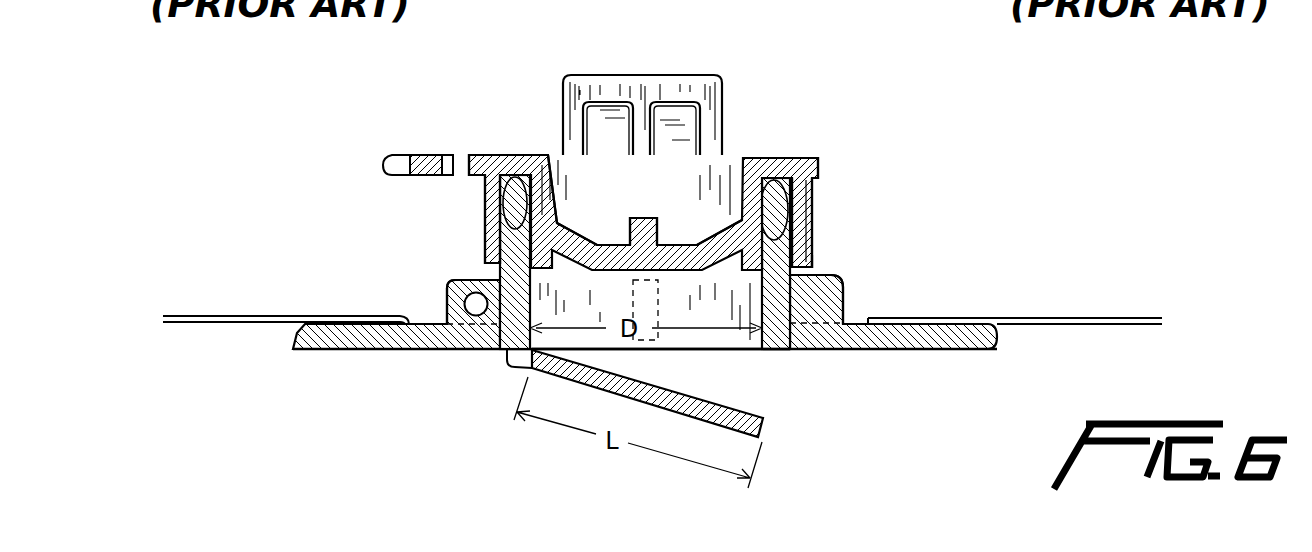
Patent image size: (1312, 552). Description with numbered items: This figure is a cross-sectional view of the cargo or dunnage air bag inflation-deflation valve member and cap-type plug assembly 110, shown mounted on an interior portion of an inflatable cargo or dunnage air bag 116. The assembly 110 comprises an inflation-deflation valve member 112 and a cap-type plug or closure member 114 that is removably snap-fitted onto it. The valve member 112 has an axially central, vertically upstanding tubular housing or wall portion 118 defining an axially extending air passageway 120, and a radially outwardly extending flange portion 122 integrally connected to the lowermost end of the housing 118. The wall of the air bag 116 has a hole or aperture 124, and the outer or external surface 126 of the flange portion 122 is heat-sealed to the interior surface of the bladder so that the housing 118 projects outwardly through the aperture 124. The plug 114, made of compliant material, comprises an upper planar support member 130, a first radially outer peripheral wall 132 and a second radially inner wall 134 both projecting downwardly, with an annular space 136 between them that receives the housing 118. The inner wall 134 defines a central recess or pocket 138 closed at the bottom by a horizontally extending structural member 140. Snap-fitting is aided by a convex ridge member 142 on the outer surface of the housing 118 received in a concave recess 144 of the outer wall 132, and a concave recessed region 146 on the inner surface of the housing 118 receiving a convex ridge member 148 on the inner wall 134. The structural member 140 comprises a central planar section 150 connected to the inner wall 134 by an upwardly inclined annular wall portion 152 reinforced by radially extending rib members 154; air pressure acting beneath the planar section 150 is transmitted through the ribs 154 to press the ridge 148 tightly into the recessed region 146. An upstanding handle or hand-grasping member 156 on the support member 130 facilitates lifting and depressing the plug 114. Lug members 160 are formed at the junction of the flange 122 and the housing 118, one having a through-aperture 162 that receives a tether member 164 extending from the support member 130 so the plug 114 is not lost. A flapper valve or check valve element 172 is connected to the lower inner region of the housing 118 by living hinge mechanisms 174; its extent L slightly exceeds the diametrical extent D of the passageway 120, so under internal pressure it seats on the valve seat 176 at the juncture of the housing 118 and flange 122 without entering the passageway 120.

The cargo or dunnage air bag inflation-deflation valve member and cap-type plug asse 110 is at (930, 104).
The inflation-deflation valve member 112 is at (925, 279).
The cap-type plug or closure member 114 is at (758, 79).
The inflatable cargo or dunnage air bag 116 is at (1077, 316).
The tubular housing or wall portion 118 is at (482, 155).
The air passageway 120 is at (716, 352).
The radially outwardly extending flange portion 122 is at (945, 335).
The hole or aperture 124 is at (404, 312).
The outer or external surface of the flange portion 126 is at (430, 320).
The upper planar support member 130 is at (790, 158).
The first radially outer circumferentially extending peripheral wall 132 is at (806, 201).
The second radially inner circumferentially extending wall 134 is at (550, 157).
The annular space 136 is at (768, 170).
The central recess or pocket 138 is at (605, 165).
The substantially horizontally extending structural member 140 is at (667, 237).
The circumferentially extending convex band or ridge member 142 is at (483, 240).
The circumferentially extending concave recess 144 is at (812, 243).
The circumferentially extending concave recessed region 146 is at (785, 227).
The circumferentially extending convex band or ridge member 148 is at (800, 175).
The axially central horizontally disposed planar section 150 is at (612, 270).
The upwardly inclined annular wall portion 152 is at (613, 232).
The radially extending rib members 154 is at (540, 292).
The handle or hand-grasping member 156 is at (667, 83).
The lug members 160 is at (837, 282).
The through-aperture 162 is at (476, 306).
The tether member 164 is at (392, 155).
The flapper valve or check valve element 172 is at (765, 420).
The living hinge mechanisms 174 is at (510, 364).
The valve seat 176 is at (765, 352).